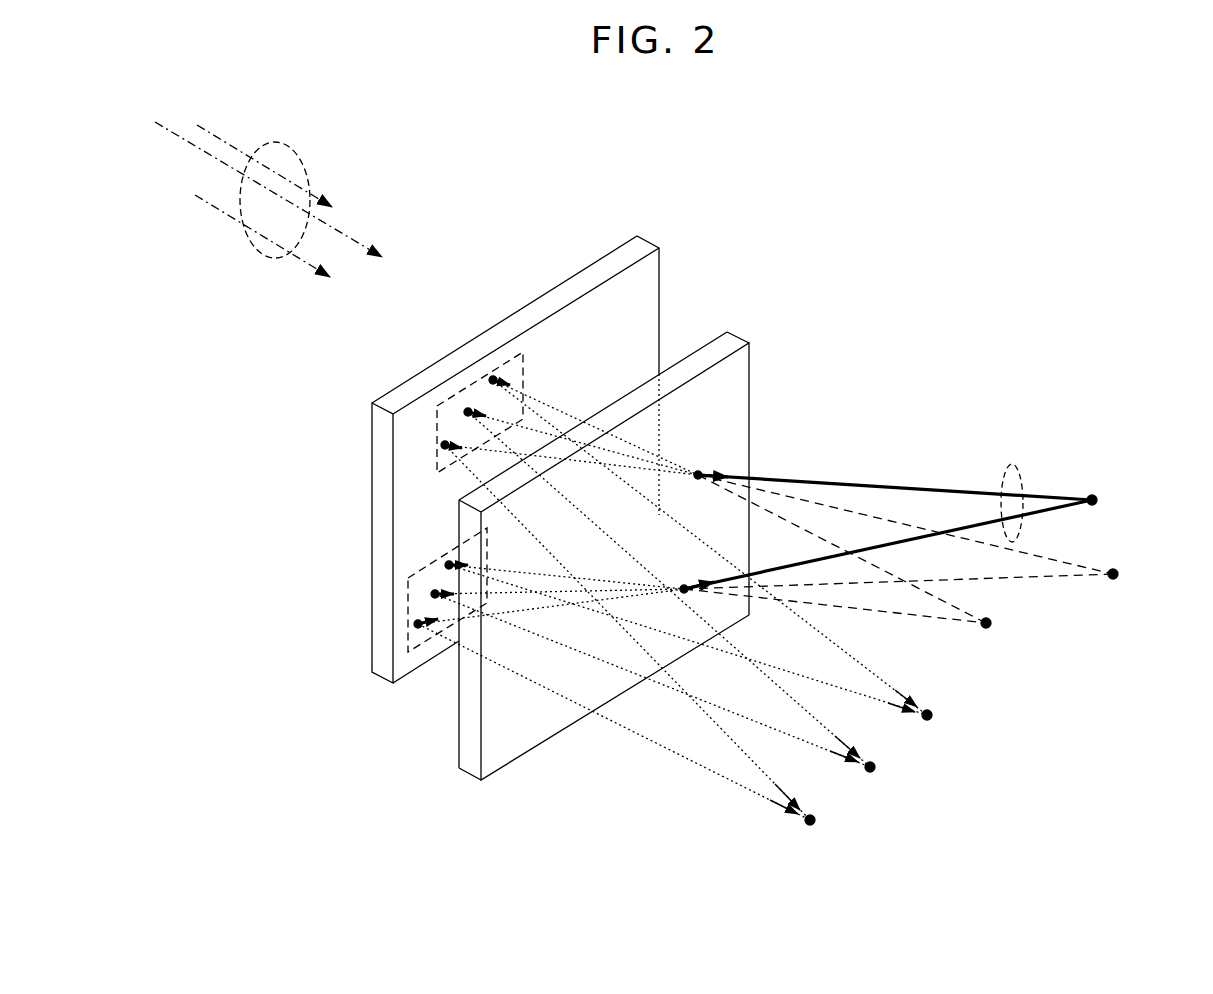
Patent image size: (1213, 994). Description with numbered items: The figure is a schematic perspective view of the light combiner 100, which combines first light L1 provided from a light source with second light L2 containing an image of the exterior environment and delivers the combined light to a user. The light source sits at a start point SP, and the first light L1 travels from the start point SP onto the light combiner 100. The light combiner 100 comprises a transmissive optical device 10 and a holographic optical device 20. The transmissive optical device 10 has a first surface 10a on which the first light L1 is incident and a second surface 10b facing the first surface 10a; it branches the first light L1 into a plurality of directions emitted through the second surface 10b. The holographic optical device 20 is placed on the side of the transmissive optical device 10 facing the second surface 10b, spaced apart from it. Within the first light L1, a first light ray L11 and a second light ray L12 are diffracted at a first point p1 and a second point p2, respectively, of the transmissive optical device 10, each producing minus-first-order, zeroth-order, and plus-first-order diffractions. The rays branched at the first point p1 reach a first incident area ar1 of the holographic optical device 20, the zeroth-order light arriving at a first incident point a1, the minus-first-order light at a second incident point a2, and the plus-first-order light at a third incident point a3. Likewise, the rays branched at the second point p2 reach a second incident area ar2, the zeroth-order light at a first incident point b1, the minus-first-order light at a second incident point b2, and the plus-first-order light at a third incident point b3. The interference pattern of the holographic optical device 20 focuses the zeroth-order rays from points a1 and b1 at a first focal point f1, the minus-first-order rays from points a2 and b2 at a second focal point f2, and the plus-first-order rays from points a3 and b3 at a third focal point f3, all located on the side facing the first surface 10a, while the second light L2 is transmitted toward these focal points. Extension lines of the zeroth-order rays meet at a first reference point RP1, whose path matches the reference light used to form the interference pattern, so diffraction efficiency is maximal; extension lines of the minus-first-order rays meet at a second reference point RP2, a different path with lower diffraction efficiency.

The light combiner 100 is at (852, 218).
The holographic optical device 20 is at (659, 247).
The transmissive optical device 10 is at (468, 776).
The first surface 10a is at (502, 740).
The second surface 10b is at (475, 722).
The first incident area ar1 is at (524, 355).
The second incident area ar2 is at (408, 579).
The first incident point a1 is at (466, 407).
The second incident point a2 is at (491, 375).
The third incident point a3 is at (443, 440).
The first incident point b1 is at (432, 594).
The second incident point b2 is at (447, 562).
The third incident point b3 is at (416, 626).
The first point p1 is at (698, 470).
The second point p2 is at (684, 585).
The first light L1 is at (1010, 464).
The second light L2 is at (248, 242).
The first light ray L11 is at (910, 487).
The second light ray L12 is at (807, 560).
The start point SP is at (1100, 500).
The first reference point RP1 is at (1121, 574).
The second reference point RP2 is at (994, 623).
The first focal point f1 is at (878, 769).
The second focal point f2 is at (935, 717).
The third focal point f3 is at (818, 822).